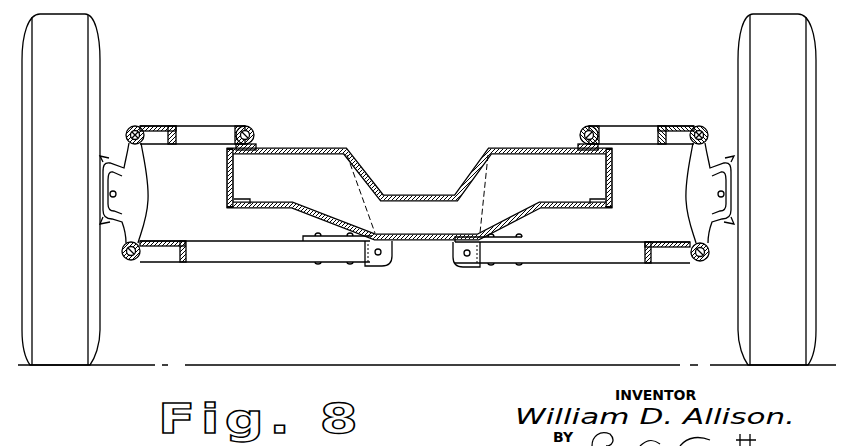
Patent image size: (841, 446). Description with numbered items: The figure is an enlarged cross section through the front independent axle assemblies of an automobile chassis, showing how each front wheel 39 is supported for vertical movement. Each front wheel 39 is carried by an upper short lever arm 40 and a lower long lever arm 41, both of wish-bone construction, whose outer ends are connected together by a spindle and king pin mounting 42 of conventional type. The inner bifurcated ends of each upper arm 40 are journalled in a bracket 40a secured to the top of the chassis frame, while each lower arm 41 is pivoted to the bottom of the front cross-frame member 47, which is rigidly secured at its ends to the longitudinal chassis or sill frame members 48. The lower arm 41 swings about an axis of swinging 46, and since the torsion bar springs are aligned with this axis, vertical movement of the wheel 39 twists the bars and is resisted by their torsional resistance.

The front wheels 39 is at (84, 22).
The upper swinging arm 40 is at (180, 127).
The bracket 40a is at (578, 146).
The lower swinging arm 41 is at (175, 263).
The spindle and king pin mounting 42 is at (140, 222).
The axis of swinging 46 is at (372, 268).
The front cross-frame member 47 is at (320, 148).
The longitudinal chassis frame members 48 is at (226, 170).